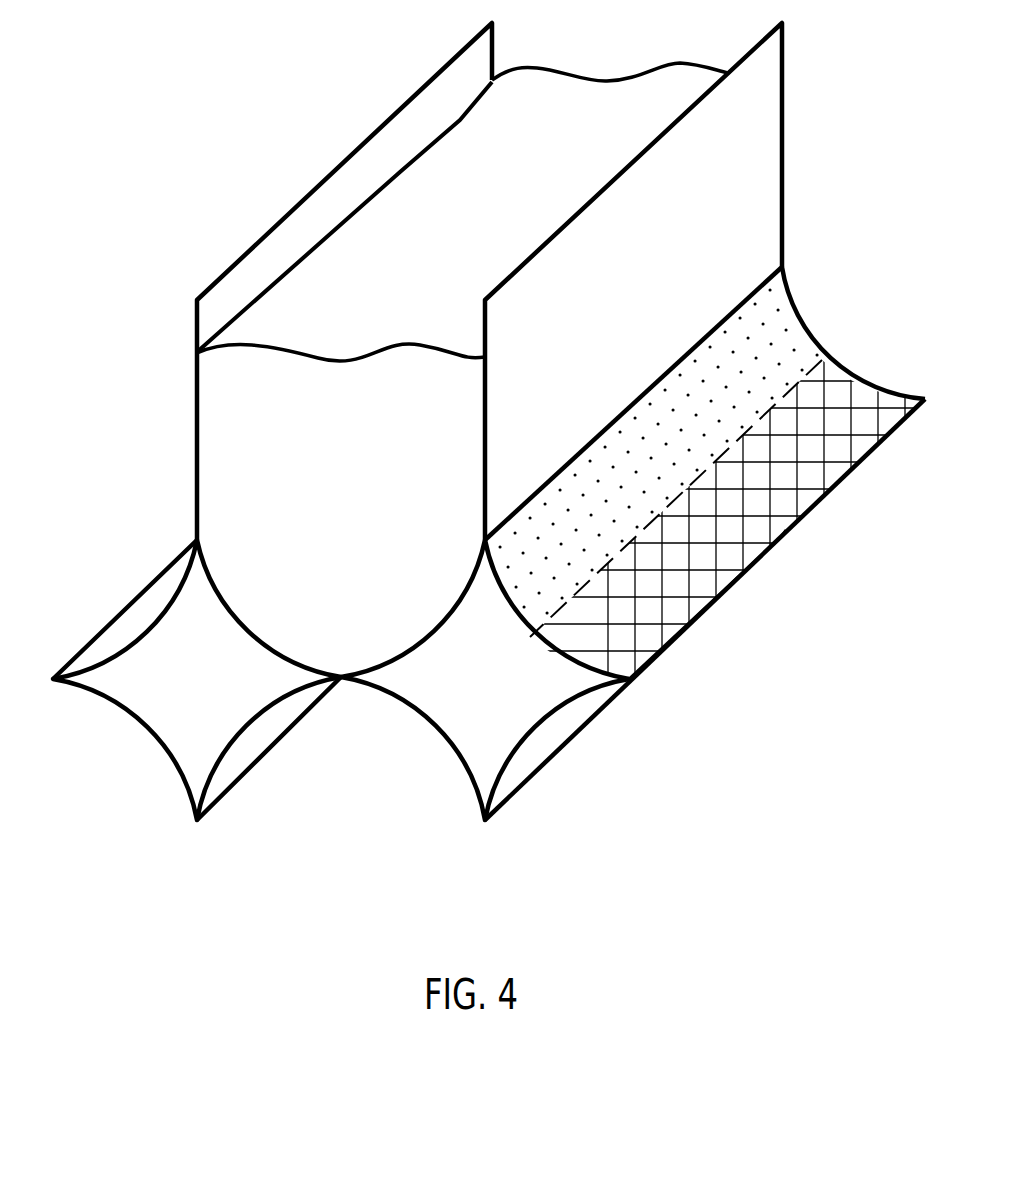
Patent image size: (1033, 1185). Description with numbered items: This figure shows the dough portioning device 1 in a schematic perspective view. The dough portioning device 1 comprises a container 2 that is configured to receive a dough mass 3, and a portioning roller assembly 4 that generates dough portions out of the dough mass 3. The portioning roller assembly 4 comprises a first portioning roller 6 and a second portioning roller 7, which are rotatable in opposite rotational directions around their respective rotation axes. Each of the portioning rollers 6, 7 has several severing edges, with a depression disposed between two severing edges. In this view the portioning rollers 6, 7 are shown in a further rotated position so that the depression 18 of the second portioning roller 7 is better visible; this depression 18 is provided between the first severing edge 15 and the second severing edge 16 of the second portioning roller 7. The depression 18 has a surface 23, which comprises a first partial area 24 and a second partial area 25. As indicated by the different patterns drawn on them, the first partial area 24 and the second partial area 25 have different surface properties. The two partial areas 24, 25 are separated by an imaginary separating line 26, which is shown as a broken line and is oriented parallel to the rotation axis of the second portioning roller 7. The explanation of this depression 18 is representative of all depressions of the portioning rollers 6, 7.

The dough portioning device 1 is at (161, 105).
The container 2 is at (153, 452).
The dough mass 3 is at (350, 443).
The portioning roller assembly 4 is at (72, 590).
The first portioning roller 6 is at (157, 705).
The second portioning roller 7 is at (445, 705).
The first severing edge 15 is at (512, 513).
The second severing edge 16 is at (716, 543).
The depression 18 is at (850, 336).
The surface 23 is at (630, 433).
The first partial area 24 is at (705, 570).
The second partial area 25 is at (592, 502).
The separating line 26 is at (566, 612).